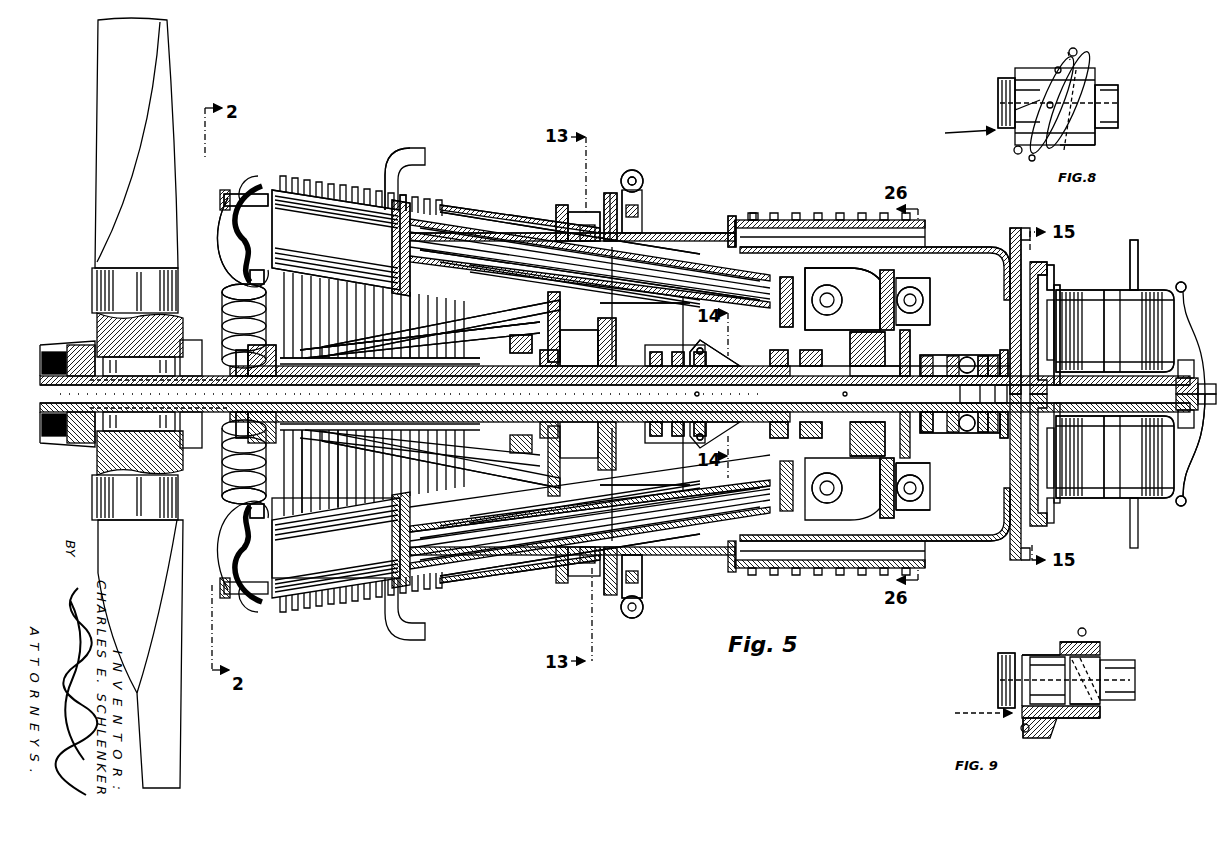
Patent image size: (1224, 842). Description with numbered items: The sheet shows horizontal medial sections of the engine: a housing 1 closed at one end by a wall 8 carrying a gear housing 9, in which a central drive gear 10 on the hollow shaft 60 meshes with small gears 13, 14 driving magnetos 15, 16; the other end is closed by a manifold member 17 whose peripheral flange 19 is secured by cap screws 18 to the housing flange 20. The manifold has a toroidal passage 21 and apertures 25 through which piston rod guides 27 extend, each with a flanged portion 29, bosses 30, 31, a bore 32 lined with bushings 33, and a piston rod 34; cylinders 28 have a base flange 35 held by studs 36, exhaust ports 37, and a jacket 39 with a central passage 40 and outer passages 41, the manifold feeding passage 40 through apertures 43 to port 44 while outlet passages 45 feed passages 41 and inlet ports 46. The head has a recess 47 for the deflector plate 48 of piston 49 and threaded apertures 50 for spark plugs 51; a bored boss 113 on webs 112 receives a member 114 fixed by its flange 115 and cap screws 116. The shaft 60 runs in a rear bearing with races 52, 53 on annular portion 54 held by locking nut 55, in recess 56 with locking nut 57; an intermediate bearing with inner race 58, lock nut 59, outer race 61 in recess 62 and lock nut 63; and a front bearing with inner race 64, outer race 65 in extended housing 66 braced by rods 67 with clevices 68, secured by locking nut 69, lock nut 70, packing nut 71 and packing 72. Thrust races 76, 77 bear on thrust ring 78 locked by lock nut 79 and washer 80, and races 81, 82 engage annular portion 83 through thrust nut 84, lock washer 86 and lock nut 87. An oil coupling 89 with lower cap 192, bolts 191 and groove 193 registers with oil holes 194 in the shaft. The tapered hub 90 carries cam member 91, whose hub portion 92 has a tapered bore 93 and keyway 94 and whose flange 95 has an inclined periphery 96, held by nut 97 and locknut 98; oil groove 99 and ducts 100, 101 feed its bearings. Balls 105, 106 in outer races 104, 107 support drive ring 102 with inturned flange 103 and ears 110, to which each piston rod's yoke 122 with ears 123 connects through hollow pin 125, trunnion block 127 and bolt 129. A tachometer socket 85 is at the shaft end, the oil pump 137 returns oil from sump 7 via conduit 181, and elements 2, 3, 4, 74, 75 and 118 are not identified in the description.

In FIG. 5, the propeller blade 75 is at (164, 60).
In FIG. 5, the propeller hub 74 is at (175, 480).
In FIG. 5, the housing 2 is at (740, 218).
In FIG. 5, the housing 1 is at (690, 232).
In FIG. 5, the bolt 3 is at (752, 212).
In FIG. 5, the flange lug 4 is at (730, 215).
In FIG. 5, the piston rod guide 27 is at (650, 232).
In FIG. 5, the piston rod 34 is at (690, 266).
In FIG. 5, the manifold member 17 is at (608, 192).
In FIG. 5, the cap screws 18 is at (604, 195).
In FIG. 5, the peripheral flange 19 is at (626, 190).
In FIG. 5, the peripheral flange 20 is at (634, 620).
In FIG. 5, the flanged portion 29 is at (622, 600).
In FIG. 5, the base flange 35 is at (562, 204).
In FIG. 5, the studs 36 is at (575, 212).
In FIG. 5, the boss 30 is at (482, 580).
In FIG. 5, the central bore 32 is at (520, 565).
In FIG. 5, the bushings 33 is at (505, 555).
In FIG. 5, the boss 31 is at (640, 545).
In FIG. 5, the piston 49 is at (470, 215).
In FIG. 5, the bored boss 113 is at (405, 215).
In FIG. 5, the member 114 is at (430, 230).
In FIG. 5, the flange 115 is at (340, 600).
In FIG. 5, the webs 112 is at (300, 600).
In FIG. 5, the cap screws 116 is at (265, 600).
In FIG. 5, the exhaust ports 37 is at (392, 165).
In FIG. 5, the cylinder 28 is at (328, 180).
In FIG. 5, the threaded apertures 50 is at (262, 184).
In FIG. 5, the spark plugs 51 is at (238, 192).
In FIG. 5, the recess 47 is at (230, 228).
In FIG. 5, the deflector plate 48 is at (300, 262).
In FIG. 5, the outer passages 41 is at (360, 248).
In FIG. 5, the lock nut 70 is at (240, 335).
In FIG. 5, the packing nut 71 is at (236, 352).
In FIG. 5, the packing 72 is at (236, 430).
In FIG. 5, the locking nut 69 is at (255, 386).
In FIG. 5, the inner race 64 is at (345, 385).
In FIG. 5, the lock nut 59 is at (520, 385).
In FIG. 5, the inner race 58 is at (550, 385).
In FIG. 5, the inlet ports 46 is at (370, 345).
In FIG. 5, the port 44 is at (430, 318).
In FIG. 5, the central passage 40 is at (466, 312).
In FIG. 5, the outlet passages 45 is at (505, 296).
In FIG. 5, the apertures 43 is at (548, 305).
In FIG. 5, the outer race 65 is at (410, 345).
In FIG. 5, the extended housing 66 is at (436, 344).
In FIG. 5, the jacket 39 is at (470, 338).
In FIG. 5, the lock nut 63 is at (510, 340).
In FIG. 5, the annular recess 62 is at (575, 345).
In FIG. 5, the outer race 61 is at (562, 355).
In FIG. 5, the circular apertures 25 is at (616, 303).
In FIG. 5, the race 76 is at (655, 352).
In FIG. 5, the race 77 is at (676, 352).
In FIG. 5, the thrust ring 78 is at (694, 356).
In FIG. 5, the oil supply coupling 89 is at (705, 345).
In FIG. 5, the groove 193 is at (720, 360).
In FIG. 5, the oil holes 194 is at (700, 394).
In FIG. 5, the locknut 98 is at (775, 350).
In FIG. 5, the nut 97 is at (806, 350).
In FIG. 5, the hub portion 92 is at (850, 345).
In FIG. 8, the hub portion 92 is at (1085, 147).
In FIG. 9, the hub portion 92 is at (1078, 720).
In FIG. 5, the tapered bore 93 is at (815, 385).
In FIG. 8, the tapered bore 93 is at (995, 40).
In FIG. 9, the tapered bore 93 is at (995, 620).
In FIG. 5, the oil ducts 100 is at (828, 395).
In FIG. 9, the oil ducts 100 is at (1100, 705).
In FIG. 5, the annular oil groove 99 is at (875, 385).
In FIG. 5, the flange 95 is at (905, 385).
In FIG. 8, the flange 95 is at (1014, 155).
In FIG. 9, the flange 95 is at (1062, 738).
In FIG. 5, the tapered hub 90 is at (930, 385).
In FIG. 8, the tapered hub 90 is at (1095, 72).
In FIG. 9, the tapered hub 90 is at (1108, 660).
In FIG. 5, the reduced annular portion 54 is at (976, 394).
In FIG. 5, the locking nut 55 is at (1005, 394).
In FIG. 5, the yoke 122 is at (784, 276).
In FIG. 5, the ears 123 is at (828, 266).
In FIG. 5, the hollow pin 125 is at (860, 266).
In FIG. 5, the plate 118 is at (884, 268).
In FIG. 5, the trunnion block 127 is at (928, 278).
In FIG. 5, the bolt 129 is at (815, 290).
In FIG. 5, the inturned annular flange 103 is at (844, 299).
In FIG. 5, the wall 8 is at (1030, 270).
In FIG. 5, the gear housing 9 is at (1054, 270).
In FIG. 5, the gear 13 is at (1010, 470).
In FIG. 5, the ears 110 is at (910, 330).
In FIG. 5, the lock washer 86 is at (966, 356).
In FIG. 5, the annular portion 83 is at (982, 354).
In FIG. 5, the locking nut 57 is at (1003, 349).
In FIG. 5, the recess 56 is at (992, 354).
In FIG. 5, the thrust nut 84 is at (928, 434).
In FIG. 5, the race 82 is at (962, 432).
In FIG. 5, the inner race 52 is at (982, 434).
In FIG. 5, the outer race 53 is at (1003, 440).
In FIG. 5, the race 81 is at (970, 434).
In FIG. 5, the lock nut 87 is at (930, 460).
In FIG. 5, the gear 14 is at (1056, 316).
In FIG. 5, the central drive gear 10 is at (1056, 420).
In FIG. 5, the tachometer socket 85 is at (1062, 380).
In FIG. 5, the magneto 16 is at (1125, 290).
In FIG. 5, the magneto 15 is at (1140, 498).
In FIG. 5, the conduit 181 is at (1130, 245).
In FIG. 5, the oil pump 137 is at (1198, 455).
In FIG. 5, the hollow shaft 60 is at (470, 415).
In FIG. 8, the hollow shaft 60 is at (1012, 70).
In FIG. 9, the hollow shaft 60 is at (1010, 648).
In FIG. 5, the clevices 68 is at (350, 440).
In FIG. 5, the adjustable rods 67 is at (380, 445).
In FIG. 5, the toroidal passage 21 is at (618, 470).
In FIG. 5, the washer 80 is at (655, 437).
In FIG. 5, the lock nut 79 is at (676, 437).
In FIG. 5, the lower cap 192 is at (700, 437).
In FIG. 5, the bolts 191 is at (703, 434).
In FIG. 5, the outer bearing race 104 is at (772, 425).
In FIG. 5, the balls 105 is at (800, 435).
In FIG. 8, the balls 105 is at (1073, 48).
In FIG. 9, the balls 105 is at (1084, 628).
In FIG. 5, the periphery 96 is at (840, 450).
In FIG. 8, the periphery 96 is at (1086, 58).
In FIG. 9, the periphery 96 is at (1098, 640).
In FIG. 5, the cam member 91 is at (860, 445).
In FIG. 8, the cam member 91 is at (1036, 162).
In FIG. 9, the cam member 91 is at (1050, 738).
In FIG. 5, the keyway 94 is at (905, 477).
In FIG. 8, the keyway 94 is at (1098, 145).
In FIG. 9, the keyway 94 is at (1100, 718).
In FIG. 5, the outer race 107 is at (870, 455).
In FIG. 5, the balls 106 is at (865, 462).
In FIG. 5, the drive ring 102 is at (896, 480).
In FIG. 5, the sump 7 is at (913, 484).
In FIG. 8, the oil ducts 101 is at (1015, 110).